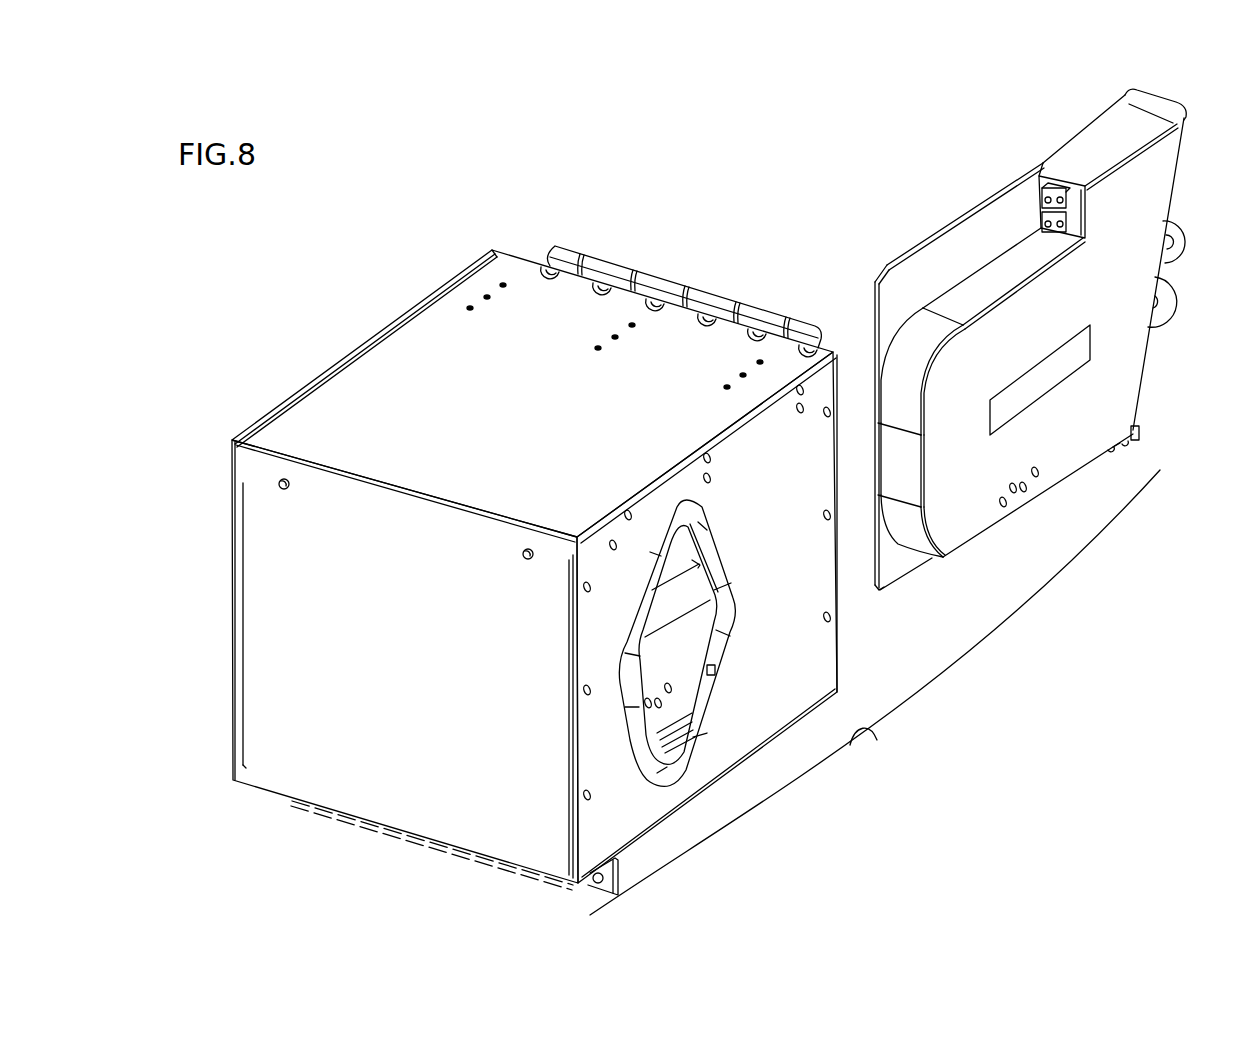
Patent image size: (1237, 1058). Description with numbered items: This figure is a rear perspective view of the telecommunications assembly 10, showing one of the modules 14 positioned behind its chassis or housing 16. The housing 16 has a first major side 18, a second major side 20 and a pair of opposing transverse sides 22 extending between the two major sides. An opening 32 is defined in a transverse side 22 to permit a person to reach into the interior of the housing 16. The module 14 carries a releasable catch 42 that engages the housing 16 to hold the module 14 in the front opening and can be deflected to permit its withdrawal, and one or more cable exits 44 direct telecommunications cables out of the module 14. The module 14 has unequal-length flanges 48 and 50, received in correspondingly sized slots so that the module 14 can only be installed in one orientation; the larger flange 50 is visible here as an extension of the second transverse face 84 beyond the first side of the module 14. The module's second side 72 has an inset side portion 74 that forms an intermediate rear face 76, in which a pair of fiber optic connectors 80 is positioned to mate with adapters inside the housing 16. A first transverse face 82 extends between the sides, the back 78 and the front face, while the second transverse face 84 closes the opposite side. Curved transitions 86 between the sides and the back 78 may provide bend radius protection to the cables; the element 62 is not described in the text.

The telecommunications assembly 10 is at (875, 692).
The module 14 is at (590, 238).
The housing 16 is at (420, 330).
The first major side 18 is at (465, 433).
The second major side 20 is at (387, 633).
The transverse side 22 is at (330, 367).
The opening 32 is at (688, 672).
The catch 42 is at (1142, 431).
The cable exit 44 is at (1173, 290).
The flange 48 is at (932, 253).
The flange 50 is at (892, 572).
The end cap 62 is at (1147, 92).
The second side 72 is at (1112, 137).
The inset side portion 74 is at (984, 285).
The rear face 76 is at (1080, 206).
The back 78 is at (884, 476).
The fiber optic connector 80 is at (1050, 190).
The first transverse face 82 is at (1082, 285).
The second transverse face 84 is at (887, 327).
The curved transition 86 is at (913, 368).